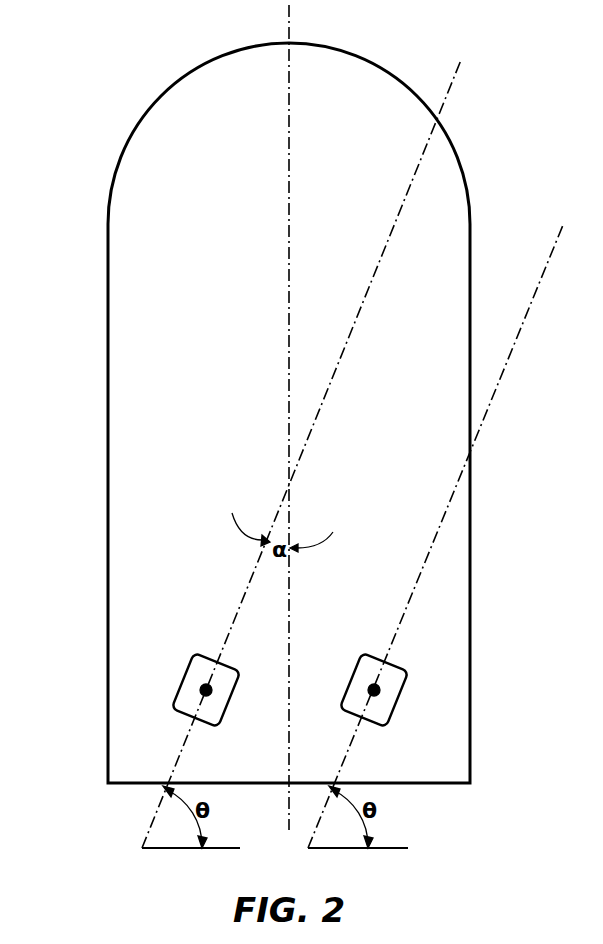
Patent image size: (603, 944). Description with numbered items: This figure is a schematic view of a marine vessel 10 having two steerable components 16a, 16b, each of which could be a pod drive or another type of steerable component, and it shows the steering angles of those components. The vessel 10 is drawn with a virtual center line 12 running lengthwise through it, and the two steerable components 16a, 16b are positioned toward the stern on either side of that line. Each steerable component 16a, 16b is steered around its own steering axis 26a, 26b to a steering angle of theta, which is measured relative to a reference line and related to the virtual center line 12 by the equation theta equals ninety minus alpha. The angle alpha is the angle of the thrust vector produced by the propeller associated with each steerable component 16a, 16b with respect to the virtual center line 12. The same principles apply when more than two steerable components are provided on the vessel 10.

The vessel 10 is at (468, 220).
The virtual center line 12 is at (289, 200).
The steerable component 16a is at (172, 697).
The steerable component 16b is at (405, 692).
The steering axis 26a is at (200, 688).
The steering axis 26b is at (370, 688).